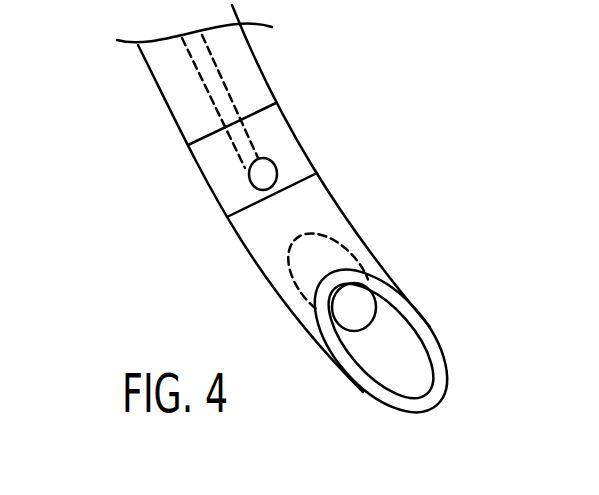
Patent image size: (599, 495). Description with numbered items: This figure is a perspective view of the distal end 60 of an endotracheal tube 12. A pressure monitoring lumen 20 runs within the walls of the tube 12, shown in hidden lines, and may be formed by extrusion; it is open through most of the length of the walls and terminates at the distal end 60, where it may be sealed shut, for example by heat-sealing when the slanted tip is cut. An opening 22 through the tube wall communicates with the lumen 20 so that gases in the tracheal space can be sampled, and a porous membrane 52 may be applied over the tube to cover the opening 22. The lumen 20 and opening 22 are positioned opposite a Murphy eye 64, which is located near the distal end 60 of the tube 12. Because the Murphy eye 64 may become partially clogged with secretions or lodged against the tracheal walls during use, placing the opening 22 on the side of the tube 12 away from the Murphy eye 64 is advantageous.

The tube 12 is at (126, 85).
The pressure monitoring lumen 20 is at (220, 85).
The opening 22 is at (263, 173).
The porous membrane 52 is at (188, 123).
The distal end 60 is at (367, 387).
The Murphy eye 64 is at (368, 314).